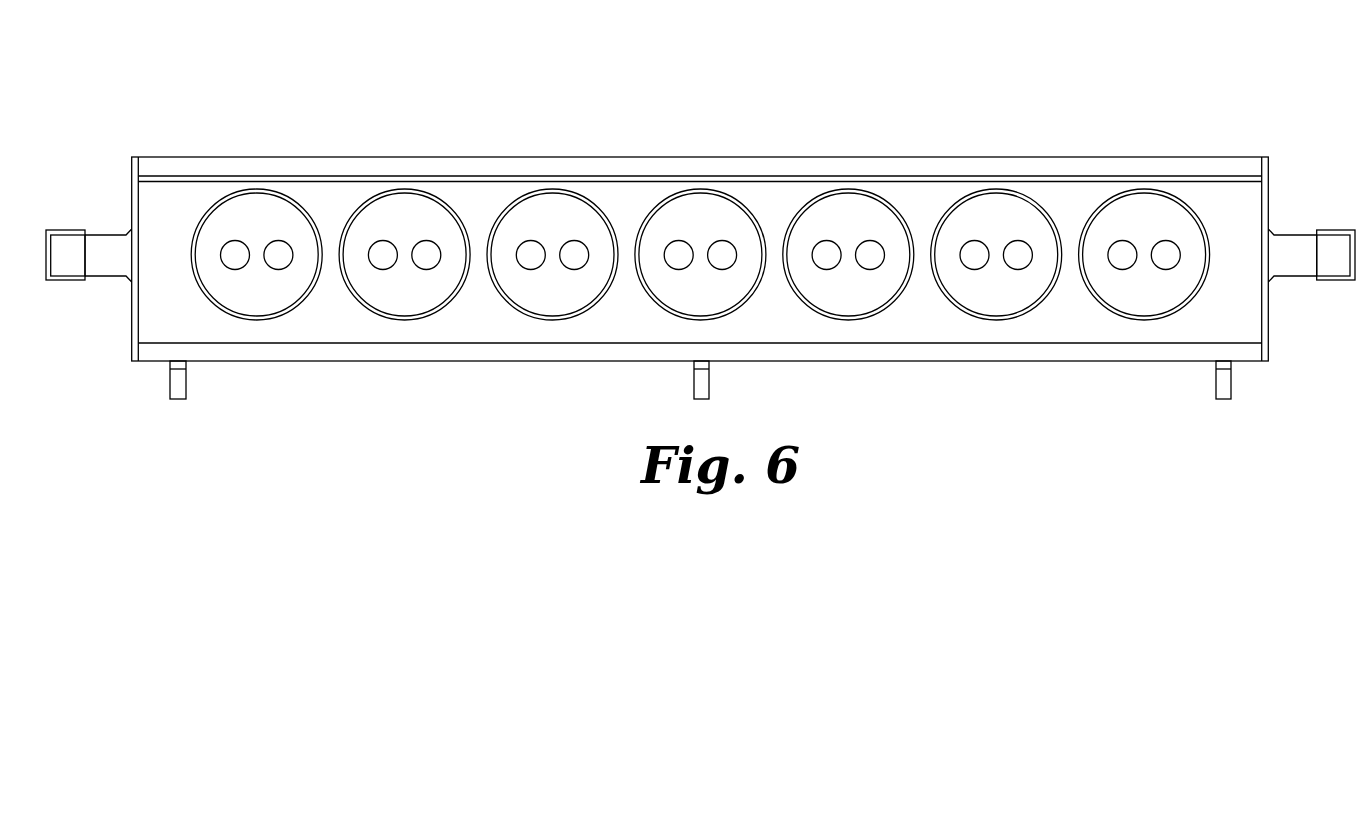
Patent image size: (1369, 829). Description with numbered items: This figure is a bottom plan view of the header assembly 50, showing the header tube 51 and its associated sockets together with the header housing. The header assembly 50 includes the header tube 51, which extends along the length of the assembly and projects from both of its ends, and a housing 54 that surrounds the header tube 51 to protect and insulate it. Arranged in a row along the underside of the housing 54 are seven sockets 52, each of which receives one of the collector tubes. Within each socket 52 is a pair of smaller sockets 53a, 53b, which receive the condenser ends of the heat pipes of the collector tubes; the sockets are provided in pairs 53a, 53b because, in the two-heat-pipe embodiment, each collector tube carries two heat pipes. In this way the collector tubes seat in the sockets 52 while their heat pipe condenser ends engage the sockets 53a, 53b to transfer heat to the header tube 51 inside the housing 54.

The header assembly 50 is at (1087, 113).
The header tube 51 is at (1287, 260).
The sockets for receiving collector tubes 52 is at (992, 213).
The first heat pipe socket of pair 53a is at (674, 240).
The second heat pipe socket of pair 53b is at (725, 247).
The housing 54 is at (345, 167).